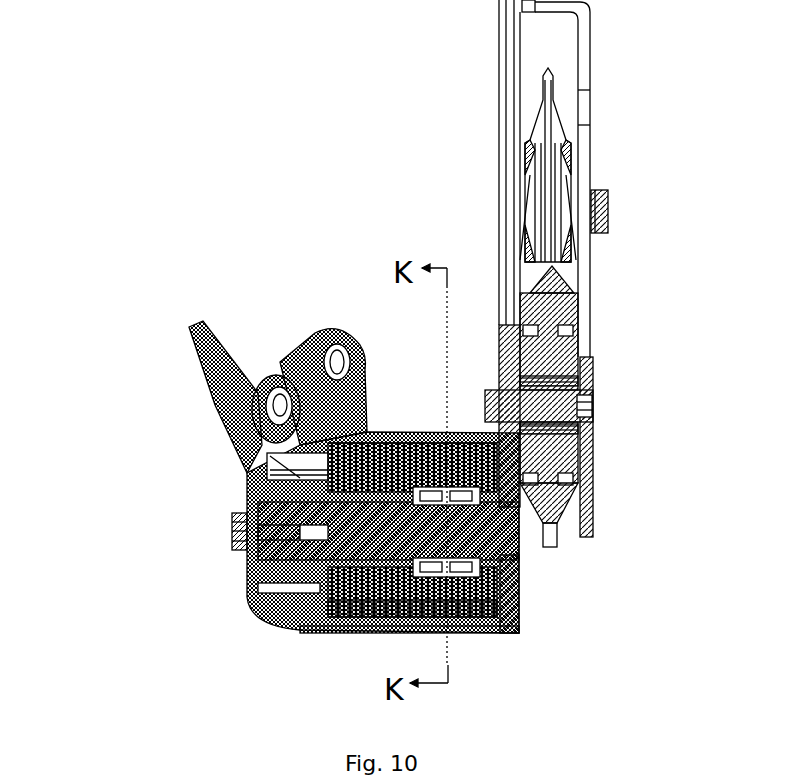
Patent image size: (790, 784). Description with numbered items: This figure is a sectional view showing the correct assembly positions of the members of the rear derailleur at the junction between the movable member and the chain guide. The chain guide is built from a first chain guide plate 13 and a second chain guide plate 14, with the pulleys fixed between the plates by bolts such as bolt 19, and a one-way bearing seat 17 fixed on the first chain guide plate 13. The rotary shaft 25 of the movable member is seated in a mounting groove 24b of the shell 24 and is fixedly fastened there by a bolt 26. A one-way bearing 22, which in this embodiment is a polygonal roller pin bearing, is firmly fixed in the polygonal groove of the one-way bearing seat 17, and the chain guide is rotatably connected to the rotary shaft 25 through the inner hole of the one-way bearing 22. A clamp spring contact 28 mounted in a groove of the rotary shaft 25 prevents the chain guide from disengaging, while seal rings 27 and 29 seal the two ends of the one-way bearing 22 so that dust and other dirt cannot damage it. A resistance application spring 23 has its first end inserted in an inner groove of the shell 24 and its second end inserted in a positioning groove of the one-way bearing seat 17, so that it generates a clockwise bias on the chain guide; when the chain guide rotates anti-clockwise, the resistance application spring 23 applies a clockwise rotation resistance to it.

The first chain guide plate 13 is at (500, 323).
The second chain guide plate 14 is at (580, 310).
The bolt 19 is at (594, 398).
The one-way bearing 22 is at (519, 592).
The resistance application spring 23 is at (350, 630).
The shell 24 is at (302, 610).
The mounting groove 24b is at (226, 428).
The rotary shaft 25 is at (519, 543).
The bolt 26 is at (232, 518).
The seal ring 27 is at (383, 630).
The clamp spring contact 28 is at (519, 570).
The seal ring 29 is at (458, 437).
The one-way bearing seat 17 is at (483, 634).